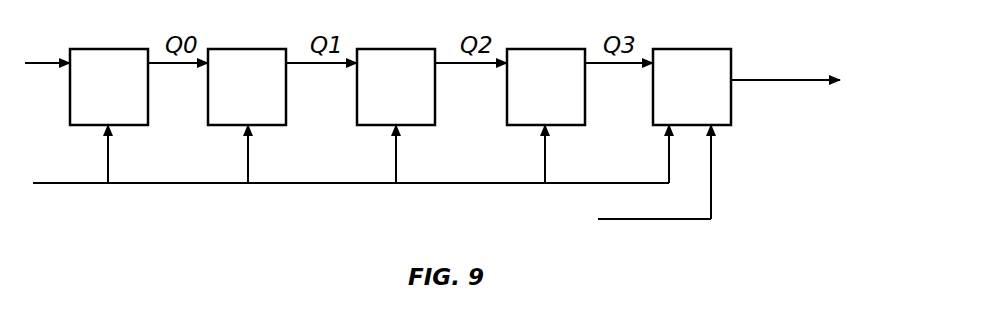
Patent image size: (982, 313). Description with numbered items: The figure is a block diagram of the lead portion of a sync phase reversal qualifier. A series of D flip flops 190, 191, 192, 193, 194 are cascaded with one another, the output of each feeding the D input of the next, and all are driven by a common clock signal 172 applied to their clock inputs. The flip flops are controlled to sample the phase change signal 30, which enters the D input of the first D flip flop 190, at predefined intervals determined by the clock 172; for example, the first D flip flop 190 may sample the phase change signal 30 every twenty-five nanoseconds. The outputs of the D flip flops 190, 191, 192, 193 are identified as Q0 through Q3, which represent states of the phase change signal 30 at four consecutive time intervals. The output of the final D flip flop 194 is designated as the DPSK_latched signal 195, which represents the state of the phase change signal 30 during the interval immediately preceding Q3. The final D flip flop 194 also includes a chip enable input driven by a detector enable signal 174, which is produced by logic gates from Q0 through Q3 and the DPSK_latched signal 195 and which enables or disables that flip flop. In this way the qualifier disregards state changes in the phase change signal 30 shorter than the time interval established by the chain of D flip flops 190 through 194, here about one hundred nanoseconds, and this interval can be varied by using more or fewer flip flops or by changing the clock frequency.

The D flip flop 190 is at (93, 49).
The D flip flop 191 is at (231, 49).
The D flip flop 192 is at (381, 49).
The D flip flop 193 is at (535, 49).
The final D flip flop 194 is at (686, 49).
The phase change signal 30 is at (45, 66).
The clock signal 172 is at (83, 185).
The detector enable signal 174 is at (632, 221).
The DPSK_latched signal 195 is at (812, 82).